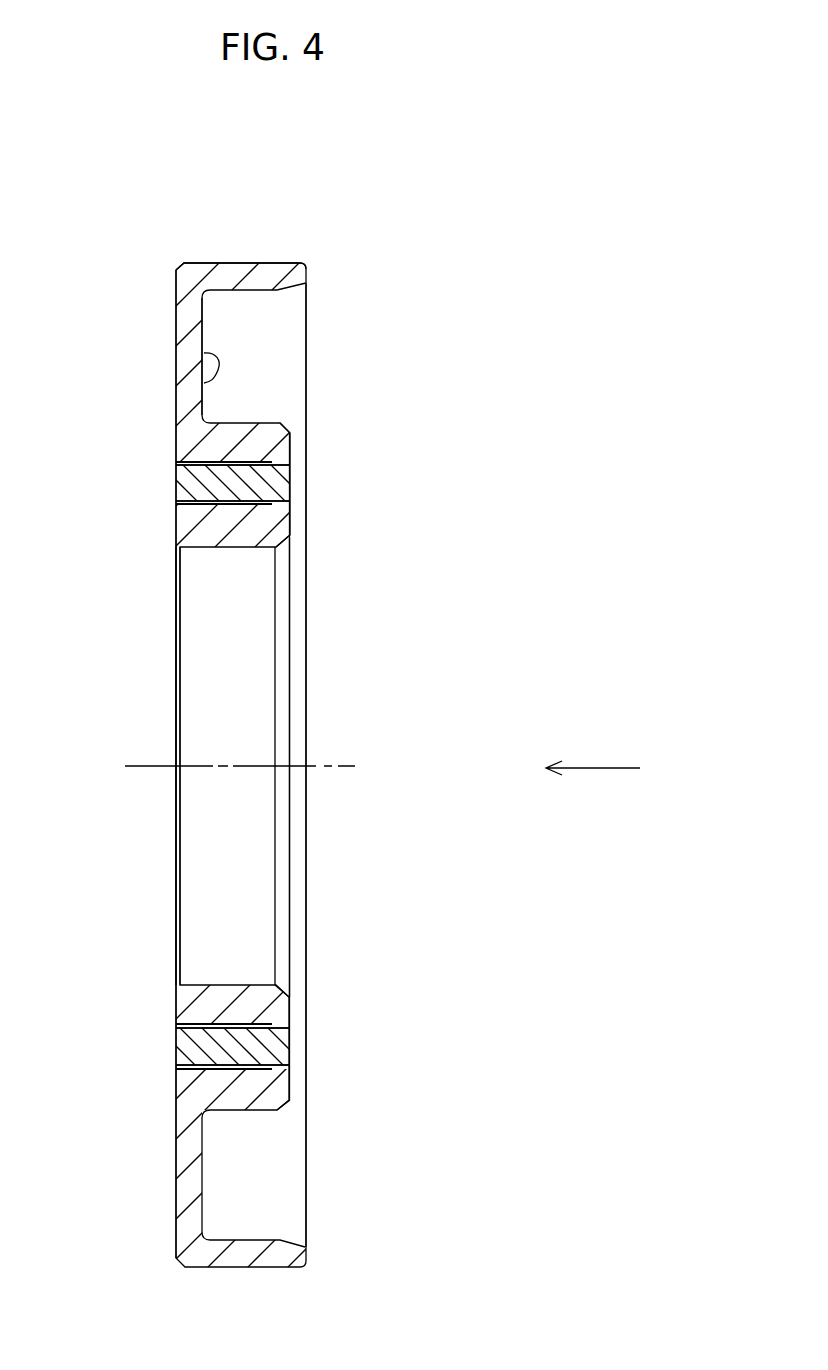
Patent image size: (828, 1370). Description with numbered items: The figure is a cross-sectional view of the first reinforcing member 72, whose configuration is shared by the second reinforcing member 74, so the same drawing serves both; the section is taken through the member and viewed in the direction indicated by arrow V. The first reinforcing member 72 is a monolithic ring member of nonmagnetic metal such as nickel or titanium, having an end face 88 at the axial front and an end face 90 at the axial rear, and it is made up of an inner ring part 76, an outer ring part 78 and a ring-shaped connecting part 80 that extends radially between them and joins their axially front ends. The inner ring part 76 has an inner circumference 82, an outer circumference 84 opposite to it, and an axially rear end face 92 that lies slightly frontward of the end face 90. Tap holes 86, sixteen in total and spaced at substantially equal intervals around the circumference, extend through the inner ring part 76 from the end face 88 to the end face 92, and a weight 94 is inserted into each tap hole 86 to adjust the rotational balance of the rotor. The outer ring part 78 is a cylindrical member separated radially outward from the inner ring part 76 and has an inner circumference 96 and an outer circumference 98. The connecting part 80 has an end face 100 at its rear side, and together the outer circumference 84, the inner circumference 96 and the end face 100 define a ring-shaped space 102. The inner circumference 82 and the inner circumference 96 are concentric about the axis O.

The first reinforcing member 72 is at (640, 124).
The second reinforcing member 74 is at (403, 596).
The inner ring part 76 is at (262, 443).
The outer ring part 78 is at (271, 282).
The connecting part 80 is at (188, 323).
The inner circumference 82 is at (198, 550).
The outer circumference 84 is at (240, 414).
The tap hole 86 is at (190, 466).
The end face 88 is at (176, 290).
The end face 90 is at (306, 648).
The end face 92 is at (289, 706).
The weight 94 is at (257, 485).
The inner circumference 96 is at (247, 291).
The outer circumference 98 is at (236, 262).
The end face 100 is at (204, 354).
The ring-shaped space 102 is at (280, 1194).
The axis O is at (140, 766).
The viewing direction V is at (610, 769).